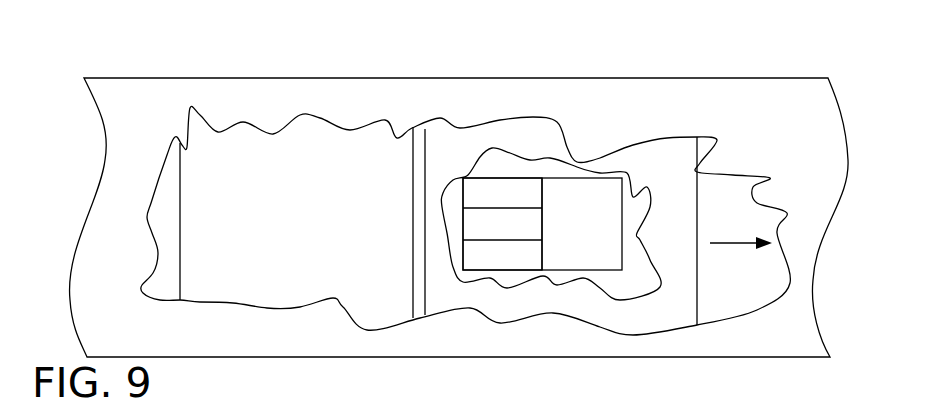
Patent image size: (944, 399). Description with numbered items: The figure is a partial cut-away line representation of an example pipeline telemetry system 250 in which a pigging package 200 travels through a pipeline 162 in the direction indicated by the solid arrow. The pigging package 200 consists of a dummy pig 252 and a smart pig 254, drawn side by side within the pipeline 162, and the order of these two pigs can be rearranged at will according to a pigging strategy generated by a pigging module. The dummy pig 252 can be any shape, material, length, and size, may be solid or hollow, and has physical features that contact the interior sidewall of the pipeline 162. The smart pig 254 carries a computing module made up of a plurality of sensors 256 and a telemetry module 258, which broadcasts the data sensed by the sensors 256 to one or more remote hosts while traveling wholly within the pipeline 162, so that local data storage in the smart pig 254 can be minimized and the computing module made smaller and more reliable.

The pipeline telemetry system 250 is at (98, 40).
The pipeline 162 is at (497, 78).
The dummy pig 252 is at (305, 231).
The smart pig 254 is at (678, 179).
The sensors 256 is at (519, 204).
The telemetry module 258 is at (597, 234).
The pigging package 200 is at (418, 324).